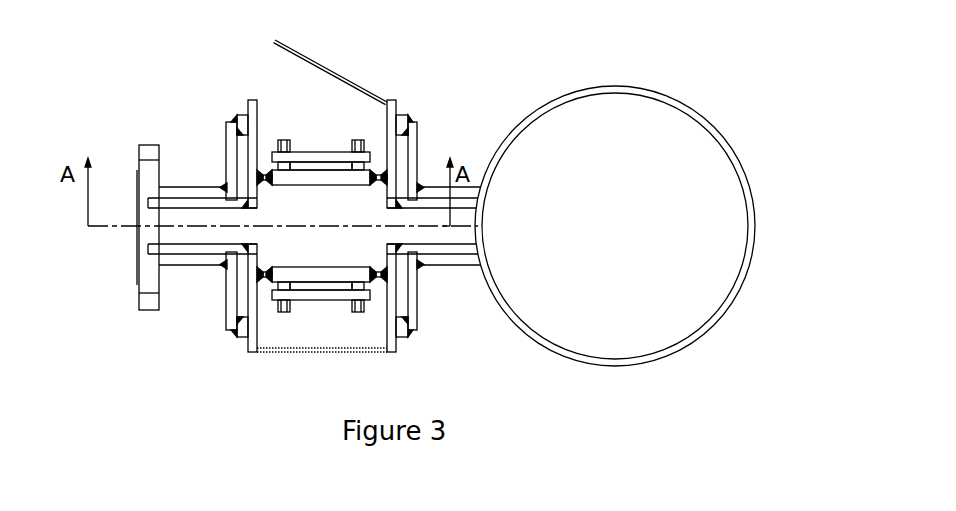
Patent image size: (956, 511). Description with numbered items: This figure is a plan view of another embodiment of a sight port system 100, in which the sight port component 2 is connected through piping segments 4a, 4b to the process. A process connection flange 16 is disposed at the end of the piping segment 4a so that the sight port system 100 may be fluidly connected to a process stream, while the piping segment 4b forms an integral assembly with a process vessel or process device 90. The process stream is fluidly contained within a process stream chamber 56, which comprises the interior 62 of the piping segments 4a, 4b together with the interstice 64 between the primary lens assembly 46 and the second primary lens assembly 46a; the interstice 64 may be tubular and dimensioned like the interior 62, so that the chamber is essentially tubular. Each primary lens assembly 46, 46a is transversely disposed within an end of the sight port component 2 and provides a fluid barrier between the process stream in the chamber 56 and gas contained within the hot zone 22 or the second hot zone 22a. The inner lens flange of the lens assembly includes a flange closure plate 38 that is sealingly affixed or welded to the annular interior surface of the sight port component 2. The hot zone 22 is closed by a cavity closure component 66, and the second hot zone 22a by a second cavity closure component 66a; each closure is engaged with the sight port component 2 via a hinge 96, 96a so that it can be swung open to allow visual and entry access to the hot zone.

The sight port system 100 is at (190, 67).
The sight port component 2 is at (444, 106).
The process connection flange 16 is at (148, 302).
The piping segment 4a is at (197, 237).
The piping segment 4b is at (433, 237).
The interior of piping segments 62 is at (212, 220).
The interstice 64 is at (332, 221).
The process stream chamber 56 is at (258, 237).
The hinge 96 is at (391, 354).
The hinge 96a is at (391, 102).
The cavity closure component 66 is at (273, 352).
The second cavity closure component 66a is at (318, 58).
The primary lens assembly 46 is at (300, 325).
The second primary lens assembly 46a is at (286, 122).
The flange closure plate 38 is at (378, 285).
The hot zone 22 is at (332, 340).
The second hot zone 22a is at (337, 135).
The process vessel or process device 90 is at (550, 307).